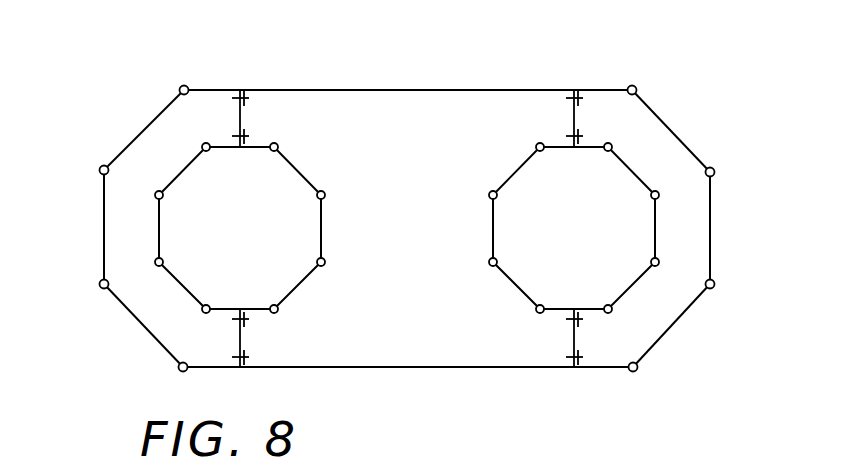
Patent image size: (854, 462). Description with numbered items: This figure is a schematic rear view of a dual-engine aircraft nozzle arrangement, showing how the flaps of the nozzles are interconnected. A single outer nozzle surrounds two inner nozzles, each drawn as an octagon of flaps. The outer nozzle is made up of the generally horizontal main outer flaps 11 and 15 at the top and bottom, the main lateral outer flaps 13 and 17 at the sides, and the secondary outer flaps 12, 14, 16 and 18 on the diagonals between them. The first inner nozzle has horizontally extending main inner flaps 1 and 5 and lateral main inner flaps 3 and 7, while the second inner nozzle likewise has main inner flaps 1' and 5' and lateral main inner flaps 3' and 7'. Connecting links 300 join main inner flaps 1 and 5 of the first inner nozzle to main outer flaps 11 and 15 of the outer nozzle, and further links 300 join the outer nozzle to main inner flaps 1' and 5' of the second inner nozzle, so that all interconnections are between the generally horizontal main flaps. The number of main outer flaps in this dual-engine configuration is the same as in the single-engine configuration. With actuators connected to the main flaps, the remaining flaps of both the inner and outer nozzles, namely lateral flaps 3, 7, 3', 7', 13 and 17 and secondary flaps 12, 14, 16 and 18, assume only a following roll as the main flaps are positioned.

The main outer flap 11 is at (416, 89).
The secondary outer flap 12 is at (139, 136).
The main lateral outer flap 13 is at (104, 242).
The secondary outer flap 14 is at (161, 343).
The main outer flap 15 is at (431, 368).
The secondary outer flap 16 is at (660, 338).
The main lateral outer flap 17 is at (711, 248).
The secondary outer flap 18 is at (674, 133).
The main inner flap 1 is at (240, 179).
The lateral main inner flap 3 is at (182, 252).
The main inner flap 5 is at (263, 285).
The lateral main inner flap 7 is at (291, 228).
The main inner flap 1' is at (574, 179).
The lateral main inner flap 3' is at (516, 252).
The main inner flap 5' is at (597, 285).
The lateral main inner flap 7' is at (621, 228).
The control link 300 is at (241, 120).